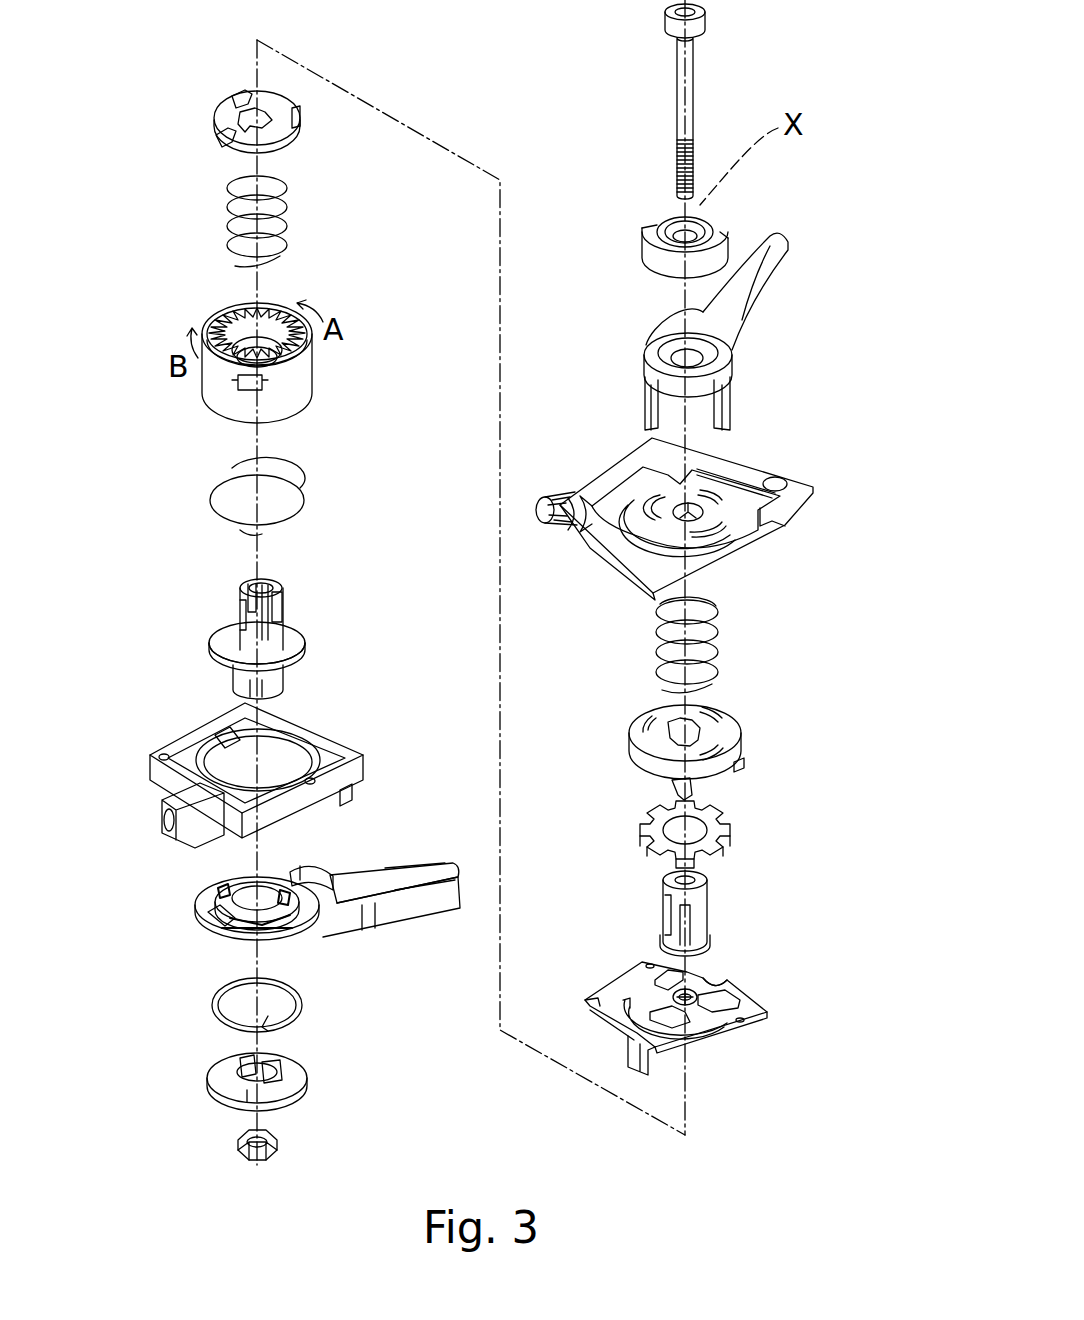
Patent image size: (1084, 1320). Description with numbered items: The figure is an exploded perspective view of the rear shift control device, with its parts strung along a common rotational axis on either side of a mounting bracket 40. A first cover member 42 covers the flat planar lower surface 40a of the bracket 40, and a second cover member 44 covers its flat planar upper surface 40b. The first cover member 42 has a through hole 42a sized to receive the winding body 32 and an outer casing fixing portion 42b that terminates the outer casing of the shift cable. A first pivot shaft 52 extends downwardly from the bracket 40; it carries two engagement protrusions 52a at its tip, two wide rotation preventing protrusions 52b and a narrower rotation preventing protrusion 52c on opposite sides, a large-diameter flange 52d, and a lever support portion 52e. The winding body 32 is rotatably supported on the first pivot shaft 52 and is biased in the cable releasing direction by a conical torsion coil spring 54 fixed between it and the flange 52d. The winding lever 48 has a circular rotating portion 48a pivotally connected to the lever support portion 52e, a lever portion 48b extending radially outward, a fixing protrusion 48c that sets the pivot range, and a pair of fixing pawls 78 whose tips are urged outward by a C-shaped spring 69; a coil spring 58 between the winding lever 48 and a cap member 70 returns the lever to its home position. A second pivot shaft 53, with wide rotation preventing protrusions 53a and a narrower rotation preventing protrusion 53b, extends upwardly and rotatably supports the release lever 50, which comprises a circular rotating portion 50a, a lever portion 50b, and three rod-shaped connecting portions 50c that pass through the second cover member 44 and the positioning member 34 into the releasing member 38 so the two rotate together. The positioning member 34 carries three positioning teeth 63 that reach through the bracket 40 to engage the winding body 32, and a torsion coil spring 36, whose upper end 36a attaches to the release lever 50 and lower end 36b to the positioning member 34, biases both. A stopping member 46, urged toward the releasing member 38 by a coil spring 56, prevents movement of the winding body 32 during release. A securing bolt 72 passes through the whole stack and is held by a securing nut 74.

The stopping member 46 is at (283, 100).
The coil spring 56 is at (287, 196).
The winding body 32 is at (313, 372).
The conical torsion coil spring 54 is at (305, 499).
The first pivot shaft 52 is at (284, 608).
The engagement protrusions 52a is at (275, 583).
The rotation preventing protrusions 52b is at (283, 602).
The rotation preventing protrusion 52c is at (253, 583).
The large-diameter flange 52d is at (307, 652).
The lever support portion 52e is at (285, 686).
The first cover member 42 is at (314, 793).
The through hole 42a is at (290, 750).
The outer casing fixing portion 42b is at (190, 828).
The winding lever 48 is at (289, 919).
The circular rotating portion 48a is at (210, 929).
The lever portion 48b is at (407, 867).
The fixing protrusion 48c is at (315, 870).
The fixing pawls 78 is at (218, 893).
The C-shaped spring 69 is at (228, 936).
The coil spring 58 is at (300, 1020).
The cap member 70 is at (308, 1078).
The securing nut 74 is at (280, 1146).
The securing bolt 72 is at (695, 92).
The release lever 50 is at (714, 288).
The circular rotating portion 50a is at (735, 352).
The lever portion 50b is at (772, 268).
The connecting portions 50c is at (645, 408).
The second cover member 44 is at (772, 464).
The coil spring 36 is at (695, 636).
The upper end 36a is at (727, 607).
The lower end 36b is at (683, 692).
The positioning member 34 is at (743, 734).
The positioning teeth 63 is at (745, 764).
The releasing member 38 is at (733, 832).
The second pivot shaft 53 is at (708, 899).
The rotation preventing protrusions 53a is at (709, 923).
The rotation preventing protrusion 53b is at (667, 912).
The mounting bracket 40 is at (718, 1021).
The lower surface 40a is at (710, 1048).
The upper surface 40b is at (706, 988).